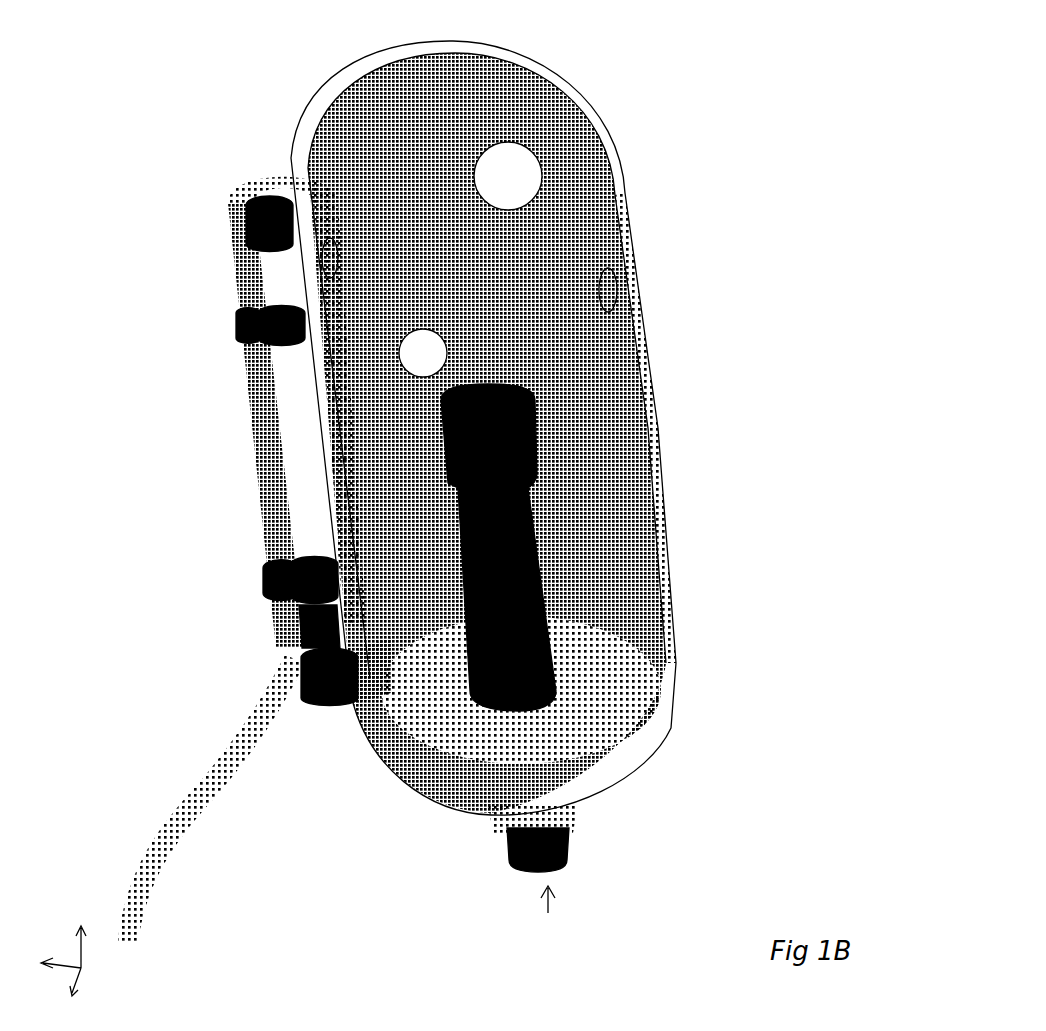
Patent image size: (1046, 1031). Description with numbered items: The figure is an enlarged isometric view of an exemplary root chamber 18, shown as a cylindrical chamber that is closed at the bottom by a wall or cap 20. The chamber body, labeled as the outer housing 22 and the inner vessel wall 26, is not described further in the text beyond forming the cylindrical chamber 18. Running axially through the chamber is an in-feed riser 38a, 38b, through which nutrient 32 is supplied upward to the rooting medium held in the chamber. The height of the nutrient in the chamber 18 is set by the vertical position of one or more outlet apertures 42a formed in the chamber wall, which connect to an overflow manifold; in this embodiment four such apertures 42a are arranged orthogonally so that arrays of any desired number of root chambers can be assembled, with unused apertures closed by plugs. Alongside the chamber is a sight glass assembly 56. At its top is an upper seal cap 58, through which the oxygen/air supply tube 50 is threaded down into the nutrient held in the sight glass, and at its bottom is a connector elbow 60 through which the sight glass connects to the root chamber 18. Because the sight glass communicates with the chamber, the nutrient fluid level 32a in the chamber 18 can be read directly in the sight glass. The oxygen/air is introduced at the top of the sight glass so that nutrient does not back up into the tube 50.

The root chamber 18 is at (650, 170).
The cap 20 is at (660, 742).
The outer housing 22 is at (550, 95).
The inner vessel 26 is at (580, 378).
The nutrient 32 is at (545, 900).
The nutrient fluid level 32a is at (282, 276).
The in-feed riser 38a is at (525, 500).
The in-feed riser 38b is at (565, 830).
The outlet apertures 42a is at (520, 165).
The oxygen/air supply tube 50 is at (205, 762).
The sight glass assembly 56 is at (280, 480).
The upper seal cap 58 is at (275, 192).
The connector elbow 60 is at (318, 700).